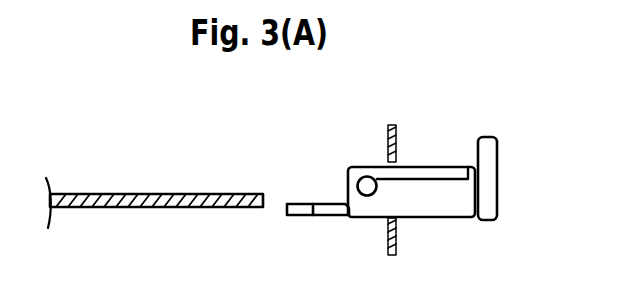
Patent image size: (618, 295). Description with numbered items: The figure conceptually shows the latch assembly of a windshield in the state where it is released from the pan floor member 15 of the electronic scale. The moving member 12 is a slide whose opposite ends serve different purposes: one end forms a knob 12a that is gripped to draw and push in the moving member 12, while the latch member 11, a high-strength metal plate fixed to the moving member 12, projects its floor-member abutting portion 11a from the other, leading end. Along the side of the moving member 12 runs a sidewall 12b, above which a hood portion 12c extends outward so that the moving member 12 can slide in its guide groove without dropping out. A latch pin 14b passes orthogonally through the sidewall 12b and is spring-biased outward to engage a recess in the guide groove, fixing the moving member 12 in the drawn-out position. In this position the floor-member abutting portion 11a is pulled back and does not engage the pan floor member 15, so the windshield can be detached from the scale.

The pan floor member 15 is at (148, 193).
The latch member 11 is at (329, 205).
The floor-member abutting portion 11a is at (294, 203).
The moving member 12 is at (412, 177).
The knob 12a is at (498, 157).
The sidewall 12b is at (437, 203).
The hood portion 12c is at (427, 170).
The latch pin 14b is at (365, 195).